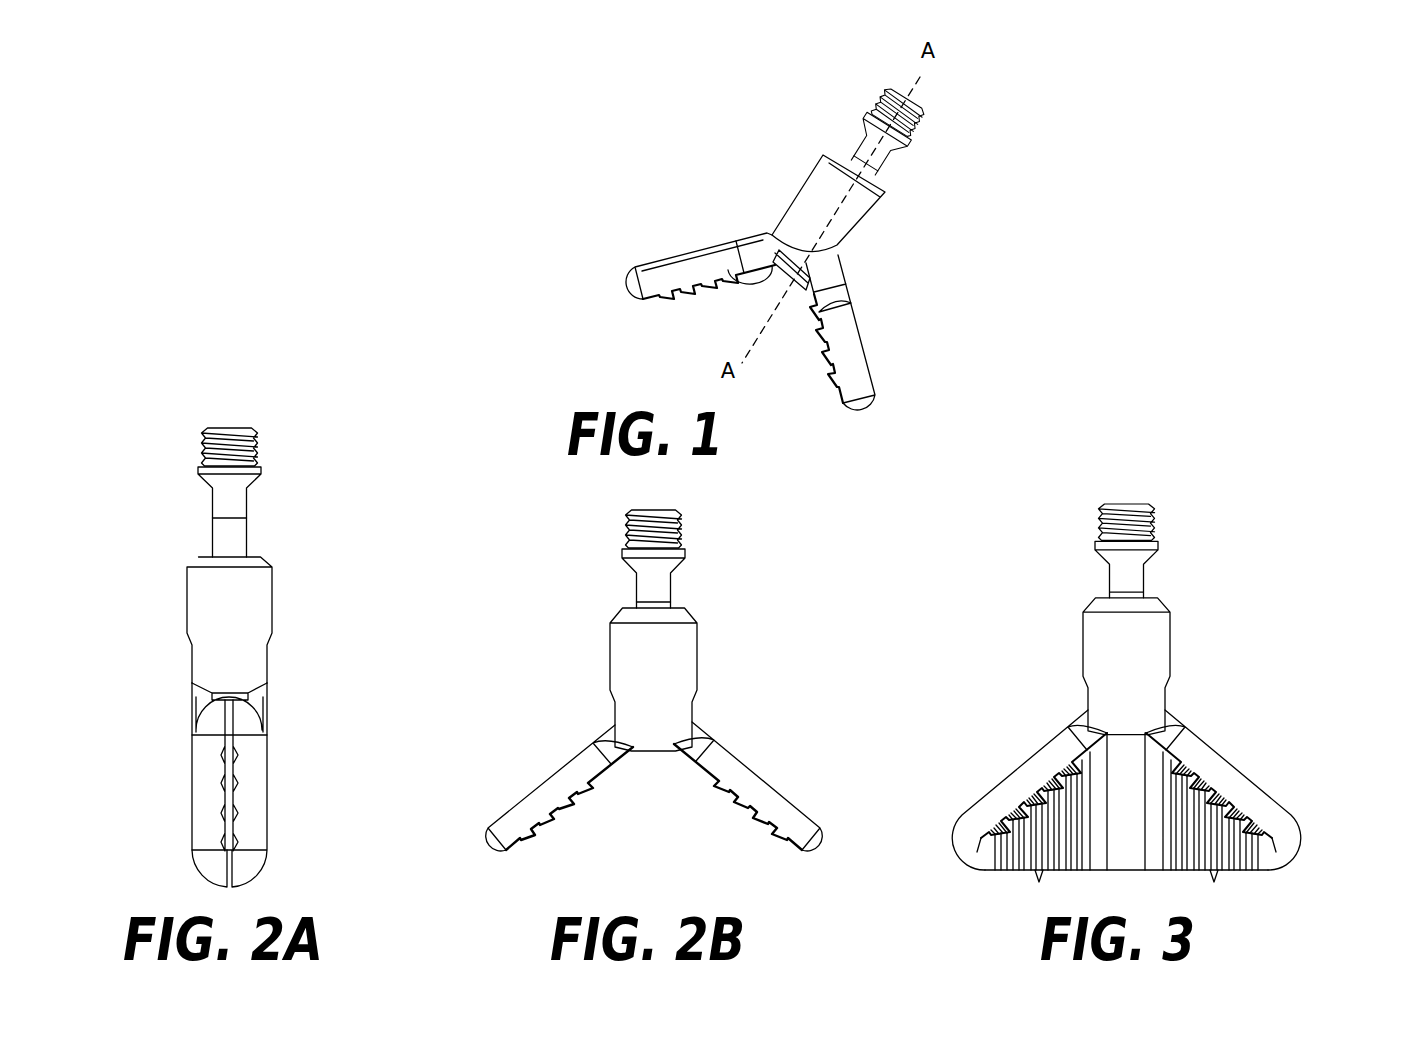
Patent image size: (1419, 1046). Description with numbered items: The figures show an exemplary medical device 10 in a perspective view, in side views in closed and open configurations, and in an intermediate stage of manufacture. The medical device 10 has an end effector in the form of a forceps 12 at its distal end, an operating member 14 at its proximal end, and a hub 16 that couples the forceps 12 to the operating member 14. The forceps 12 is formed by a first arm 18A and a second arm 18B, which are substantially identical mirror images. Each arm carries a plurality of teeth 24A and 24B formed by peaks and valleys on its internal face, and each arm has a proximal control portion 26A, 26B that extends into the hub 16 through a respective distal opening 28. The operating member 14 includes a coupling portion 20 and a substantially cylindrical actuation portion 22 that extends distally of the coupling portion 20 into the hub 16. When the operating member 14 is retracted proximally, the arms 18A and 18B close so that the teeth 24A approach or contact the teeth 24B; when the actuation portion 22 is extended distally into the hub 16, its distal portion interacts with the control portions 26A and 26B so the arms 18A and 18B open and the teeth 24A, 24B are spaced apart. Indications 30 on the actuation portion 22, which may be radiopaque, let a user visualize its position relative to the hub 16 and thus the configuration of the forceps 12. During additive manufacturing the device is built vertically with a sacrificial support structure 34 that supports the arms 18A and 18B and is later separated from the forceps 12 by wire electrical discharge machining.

In FIG. 1, the medical device 10 is at (978, 117).
In FIG. 2A, the medical device 10 is at (388, 473).
In FIG. 2B, the medical device 10 is at (570, 596).
In FIG. 3, the medical device 10 is at (948, 571).
In FIG. 1, the forceps 12 is at (914, 337).
In FIG. 2A, the forceps 12 is at (312, 757).
In FIG. 2B, the forceps 12 is at (757, 750).
In FIG. 3, the forceps 12 is at (1240, 729).
In FIG. 1, the operating member 14 is at (918, 140).
In FIG. 2A, the operating member 14 is at (172, 500).
In FIG. 2B, the operating member 14 is at (716, 529).
In FIG. 3, the operating member 14 is at (1190, 514).
In FIG. 1, the hub 16 is at (850, 205).
In FIG. 2A, the hub 16 is at (190, 612).
In FIG. 2B, the hub 16 is at (698, 662).
In FIG. 3, the hub 16 is at (1170, 645).
In FIG. 1, the first arm 18A is at (869, 335).
In FIG. 2A, the first arm 18A is at (255, 823).
In FIG. 2B, the first arm 18A is at (780, 790).
In FIG. 3, the first arm 18A is at (1265, 800).
In FIG. 1, the second arm 18B is at (653, 299).
In FIG. 2A, the second arm 18B is at (198, 822).
In FIG. 2B, the second arm 18B is at (559, 777).
In FIG. 3, the second arm 18B is at (1000, 800).
In FIG. 1, the coupling portion 20 is at (898, 111).
In FIG. 2A, the coupling portion 20 is at (245, 438).
In FIG. 2B, the coupling portion 20 is at (654, 529).
In FIG. 3, the coupling portion 20 is at (1127, 522).
In FIG. 1, the actuation portion 22 is at (876, 146).
In FIG. 2A, the actuation portion 22 is at (247, 493).
In FIG. 2B, the actuation portion 22 is at (653, 578).
In FIG. 3, the actuation portion 22 is at (1126, 569).
In FIG. 1, the teeth of first arm 24A is at (822, 362).
In FIG. 2A, the teeth of first arm 24A is at (233, 790).
In FIG. 2B, the teeth of first arm 24A is at (757, 825).
In FIG. 1, the teeth of second arm 24B is at (668, 305).
In FIG. 2A, the teeth of second arm 24B is at (225, 793).
In FIG. 2B, the teeth of second arm 24B is at (548, 822).
In FIG. 1, the proximal control portion of first arm 26A is at (843, 290).
In FIG. 1, the proximal control portion of second arm 26B is at (748, 232).
In FIG. 1, the distal openings 28 is at (843, 256).
In FIG. 1, the indications 30 is at (866, 163).
In FIG. 2A, the indications 30 is at (233, 518).
In FIG. 3, the support structure 34 is at (1280, 870).